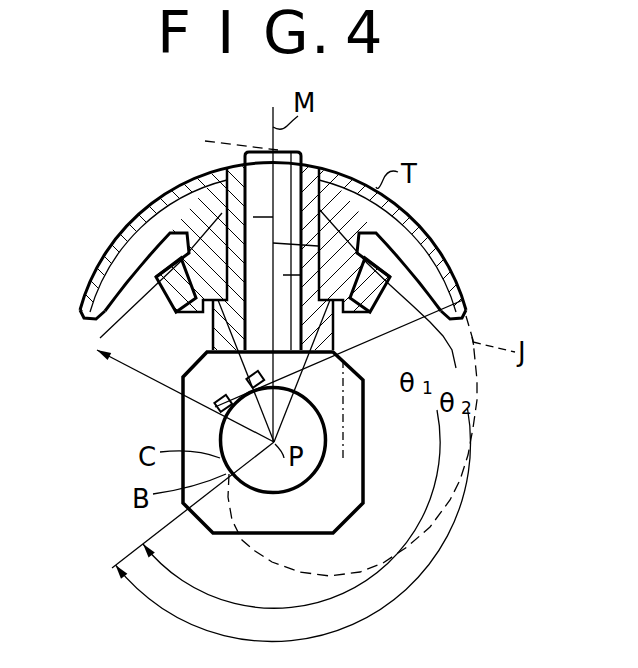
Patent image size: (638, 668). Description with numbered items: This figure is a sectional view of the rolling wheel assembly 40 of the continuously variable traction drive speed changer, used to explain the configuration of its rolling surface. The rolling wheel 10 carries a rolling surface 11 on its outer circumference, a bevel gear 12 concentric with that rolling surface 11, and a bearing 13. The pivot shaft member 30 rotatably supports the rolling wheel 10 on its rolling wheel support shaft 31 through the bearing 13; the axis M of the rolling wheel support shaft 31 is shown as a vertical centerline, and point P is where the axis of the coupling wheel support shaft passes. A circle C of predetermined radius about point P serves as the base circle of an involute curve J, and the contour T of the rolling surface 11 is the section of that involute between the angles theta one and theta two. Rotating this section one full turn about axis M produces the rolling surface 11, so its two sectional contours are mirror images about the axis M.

The rolling wheel 10 is at (170, 193).
The rolling surface 11 is at (97, 270).
The bevel gear 12 is at (170, 306).
The bearing 13 is at (232, 167).
The pivot shaft member 30 is at (337, 484).
The rolling wheel support shaft 31 is at (208, 234).
The rolling wheel assembly 40 is at (143, 417).